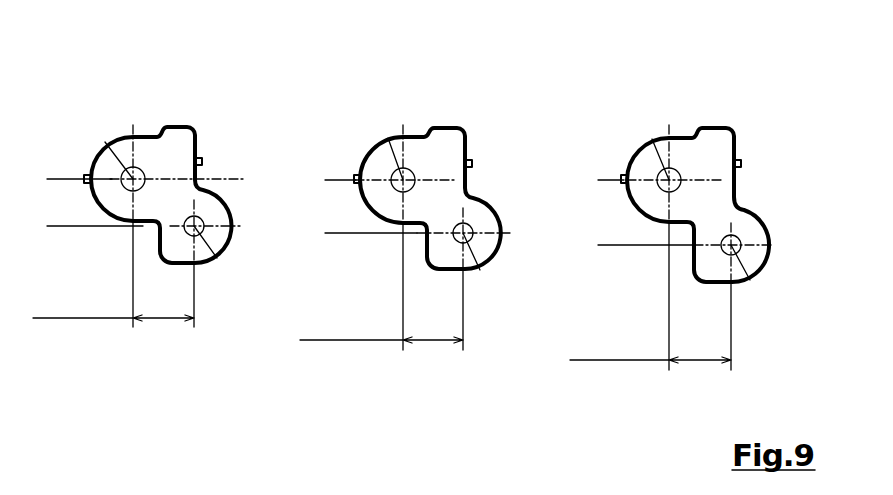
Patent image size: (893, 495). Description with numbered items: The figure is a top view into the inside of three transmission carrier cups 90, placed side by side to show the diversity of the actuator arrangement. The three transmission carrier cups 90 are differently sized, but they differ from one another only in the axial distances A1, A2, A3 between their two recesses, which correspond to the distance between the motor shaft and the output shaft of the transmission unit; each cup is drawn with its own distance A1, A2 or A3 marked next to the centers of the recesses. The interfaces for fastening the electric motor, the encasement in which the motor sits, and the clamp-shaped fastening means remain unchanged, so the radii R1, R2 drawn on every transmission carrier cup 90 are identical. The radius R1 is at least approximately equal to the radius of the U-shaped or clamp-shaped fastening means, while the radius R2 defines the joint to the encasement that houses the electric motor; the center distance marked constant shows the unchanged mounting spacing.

The transmission carrier cup 90 is at (136, 81).
The radius R1 is at (102, 134).
The radius R2 is at (220, 266).
The axial distance A1 is at (57, 148).
The axial distance A2 is at (335, 148).
The axial distance A3 is at (610, 175).